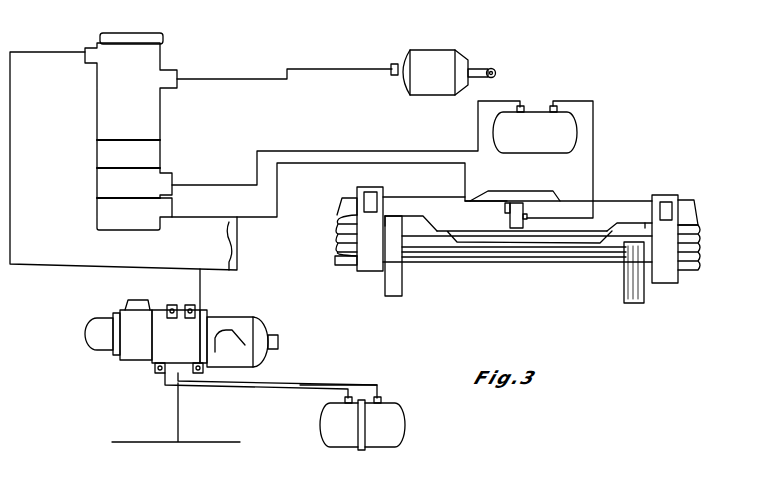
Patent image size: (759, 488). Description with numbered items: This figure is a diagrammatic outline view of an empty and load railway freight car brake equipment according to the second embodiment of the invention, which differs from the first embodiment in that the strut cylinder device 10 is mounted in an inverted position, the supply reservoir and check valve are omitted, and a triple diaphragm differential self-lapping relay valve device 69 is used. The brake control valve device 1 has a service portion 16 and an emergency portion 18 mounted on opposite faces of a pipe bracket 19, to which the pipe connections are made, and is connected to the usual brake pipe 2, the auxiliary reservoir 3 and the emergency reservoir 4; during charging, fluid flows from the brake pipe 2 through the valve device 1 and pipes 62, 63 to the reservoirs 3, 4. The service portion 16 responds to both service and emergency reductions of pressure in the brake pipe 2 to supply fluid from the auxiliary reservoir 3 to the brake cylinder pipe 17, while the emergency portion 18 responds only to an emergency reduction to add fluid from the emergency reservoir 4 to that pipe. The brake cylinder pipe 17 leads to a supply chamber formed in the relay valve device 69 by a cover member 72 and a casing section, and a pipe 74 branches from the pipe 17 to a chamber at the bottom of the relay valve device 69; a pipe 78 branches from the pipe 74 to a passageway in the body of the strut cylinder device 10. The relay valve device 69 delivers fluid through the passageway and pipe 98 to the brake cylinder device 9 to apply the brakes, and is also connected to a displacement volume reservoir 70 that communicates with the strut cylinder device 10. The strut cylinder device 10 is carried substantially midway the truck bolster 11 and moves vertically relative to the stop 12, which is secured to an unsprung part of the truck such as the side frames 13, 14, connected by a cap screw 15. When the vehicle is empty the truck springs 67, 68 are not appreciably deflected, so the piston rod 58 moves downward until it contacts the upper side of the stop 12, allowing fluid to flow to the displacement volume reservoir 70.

The brake control valve device 1 is at (210, 312).
The brake pipe 2 is at (176, 438).
The auxiliary reservoir 3 is at (332, 438).
The emergency reservoir 4 is at (383, 438).
The brake cylinder device 9 is at (437, 97).
The strut cylinder device 10 is at (504, 220).
The truck bolster 11 is at (570, 230).
The stop 12 is at (604, 243).
The truck side frame 13 is at (367, 263).
The truck side frame 14 is at (665, 278).
The cap screw 15 is at (391, 221).
The service portion 16 is at (128, 318).
The brake cylinder pipe 17 is at (42, 52).
The emergency portion 18 is at (240, 322).
The pipe bracket 19 is at (165, 352).
The piston rod 58 is at (515, 229).
The pipe 62 is at (272, 388).
The pipe 63 is at (312, 383).
The truck spring 67 is at (340, 238).
The truck spring 68 is at (690, 247).
The relay valve device 69 is at (97, 108).
The displacement volume reservoir 70 is at (540, 145).
The cover member 72 is at (127, 33).
The pipe 74 is at (229, 240).
The pipe 78 is at (281, 190).
The passageway and pipe 98 is at (182, 78).